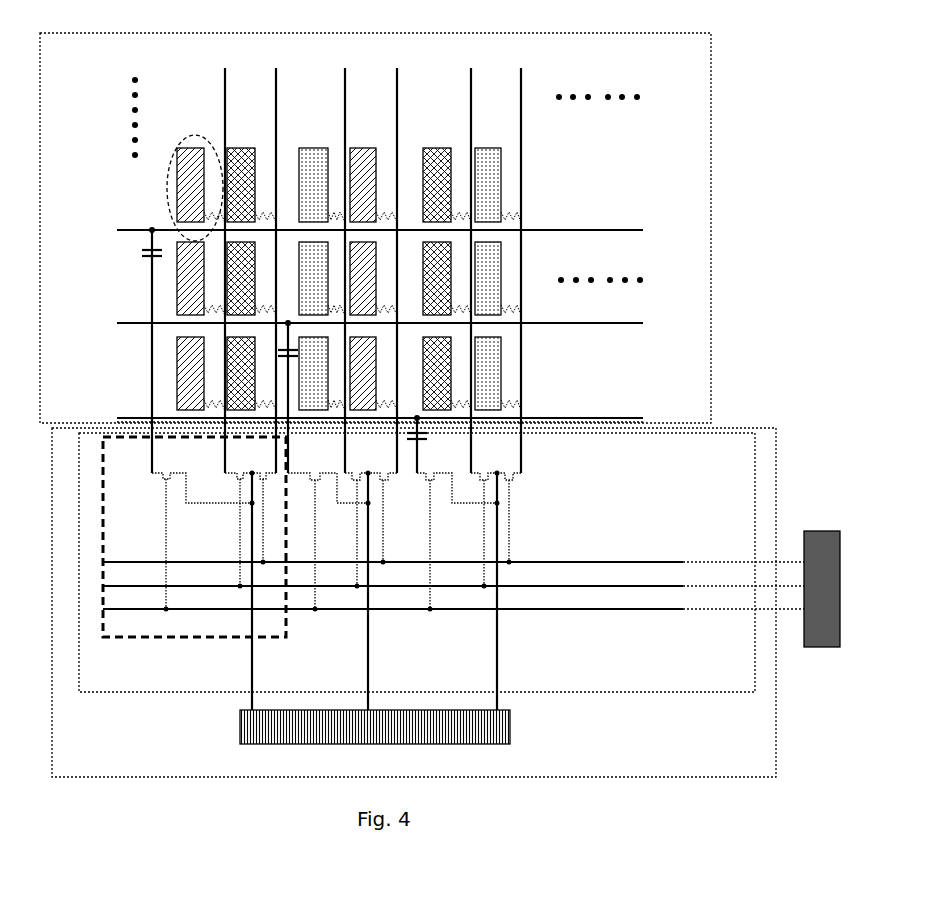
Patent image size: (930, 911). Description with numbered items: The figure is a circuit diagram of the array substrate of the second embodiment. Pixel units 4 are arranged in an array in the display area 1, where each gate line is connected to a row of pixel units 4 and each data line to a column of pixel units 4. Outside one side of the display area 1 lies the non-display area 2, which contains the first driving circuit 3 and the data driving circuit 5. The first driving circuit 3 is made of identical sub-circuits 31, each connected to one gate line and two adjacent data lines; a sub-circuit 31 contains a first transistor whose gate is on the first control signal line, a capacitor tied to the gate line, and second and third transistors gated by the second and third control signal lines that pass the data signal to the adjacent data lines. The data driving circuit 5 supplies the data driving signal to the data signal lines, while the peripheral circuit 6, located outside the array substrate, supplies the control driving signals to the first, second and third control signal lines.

The display area 1 is at (711, 33).
The non-display area 2 is at (773, 427).
The first driving circuit 3 is at (80, 453).
The sub-circuit 31 is at (102, 543).
The pixel unit 4 is at (199, 135).
The data driving circuit 5 is at (327, 733).
The peripheral circuit 6 is at (827, 527).